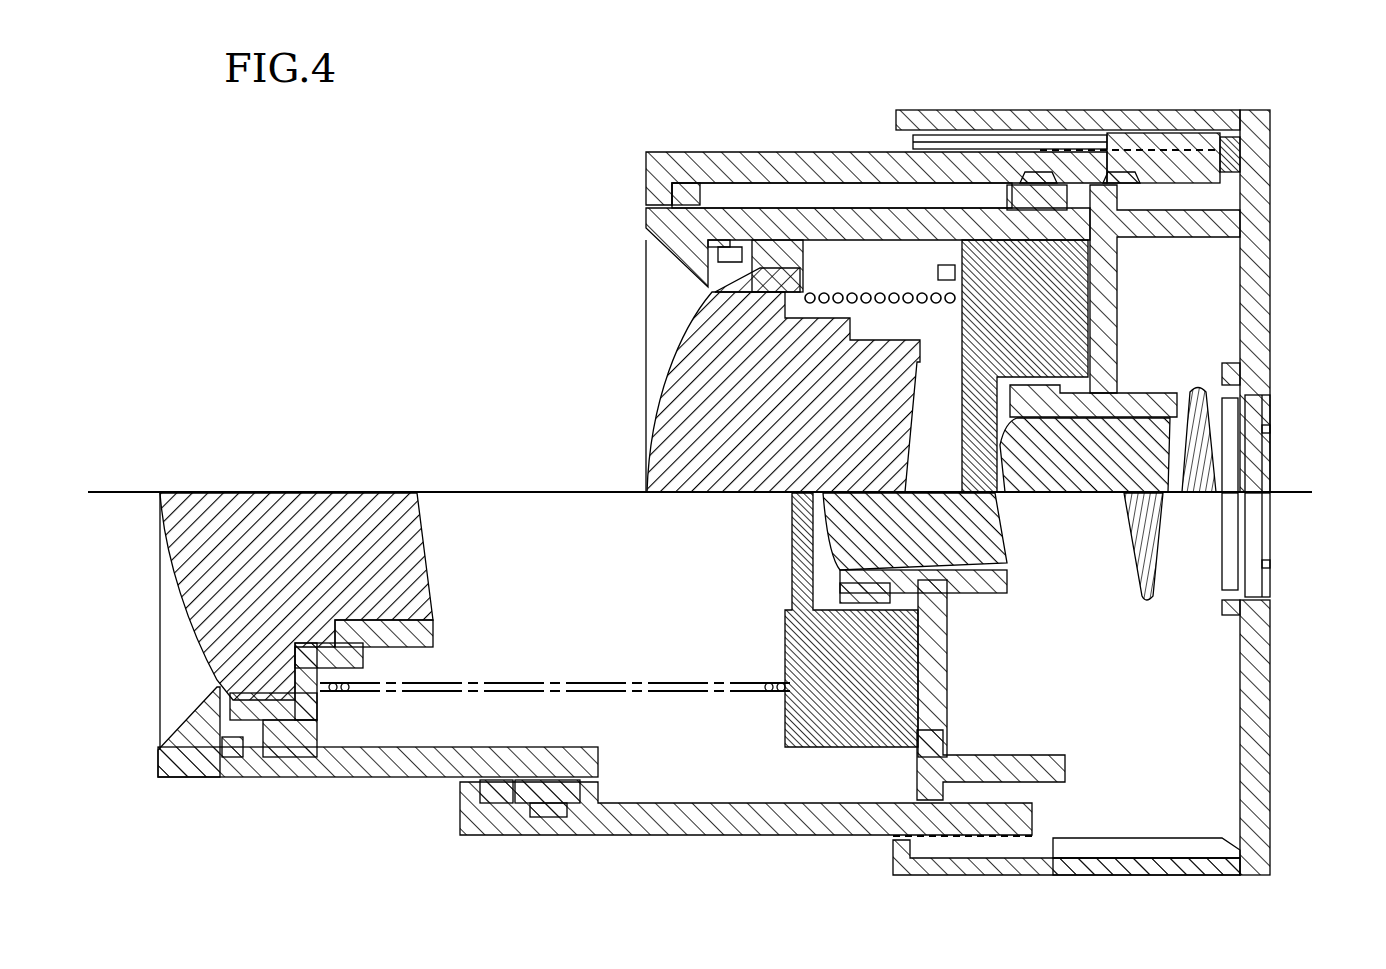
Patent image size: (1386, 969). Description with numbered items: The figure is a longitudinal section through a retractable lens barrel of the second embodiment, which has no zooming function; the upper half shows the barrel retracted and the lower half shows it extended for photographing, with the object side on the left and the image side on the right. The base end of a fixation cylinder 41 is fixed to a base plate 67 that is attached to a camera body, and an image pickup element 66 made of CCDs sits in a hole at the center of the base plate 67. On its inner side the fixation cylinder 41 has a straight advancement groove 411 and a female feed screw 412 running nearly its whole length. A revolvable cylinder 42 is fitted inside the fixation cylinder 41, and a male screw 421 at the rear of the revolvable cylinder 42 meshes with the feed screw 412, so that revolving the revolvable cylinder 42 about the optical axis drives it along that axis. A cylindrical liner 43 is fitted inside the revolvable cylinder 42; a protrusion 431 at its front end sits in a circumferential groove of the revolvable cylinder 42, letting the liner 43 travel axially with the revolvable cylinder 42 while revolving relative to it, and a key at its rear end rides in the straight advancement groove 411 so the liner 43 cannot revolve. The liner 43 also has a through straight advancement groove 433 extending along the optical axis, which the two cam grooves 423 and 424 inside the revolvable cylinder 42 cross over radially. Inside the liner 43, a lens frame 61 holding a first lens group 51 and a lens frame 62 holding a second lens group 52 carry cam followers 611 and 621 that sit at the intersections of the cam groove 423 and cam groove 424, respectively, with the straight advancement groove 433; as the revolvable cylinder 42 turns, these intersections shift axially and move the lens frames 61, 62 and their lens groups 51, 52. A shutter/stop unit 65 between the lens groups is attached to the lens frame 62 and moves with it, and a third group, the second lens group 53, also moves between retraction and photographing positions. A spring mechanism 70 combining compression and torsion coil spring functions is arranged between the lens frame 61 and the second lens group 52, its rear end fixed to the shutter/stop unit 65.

The fixation cylinder 41 is at (1228, 112).
The straight advancement groove 411 is at (1113, 855).
The female feed screw 412 is at (902, 128).
The revolvable cylinder 42 is at (748, 152).
The male screw 421 is at (1192, 140).
The cam groove 423 is at (1042, 172).
The cam groove 424 is at (1162, 150).
The cylindrical liner 43 is at (1240, 155).
The protrusion 431 is at (668, 152).
The straight advancement groove 433 is at (840, 195).
The first lens group 51 is at (672, 450).
The second lens group 52 is at (1142, 438).
The second lens group 53 is at (1232, 370).
The lens frame 61 is at (745, 258).
The cam follower 611 is at (1025, 185).
The lens frame 62 is at (1112, 225).
The cam follower 621 is at (1110, 172).
The shutter/stop unit 65 is at (1078, 298).
The image pickup element 66 is at (1248, 455).
The base plate 67 is at (1262, 245).
The spring mechanism 70 is at (865, 298).